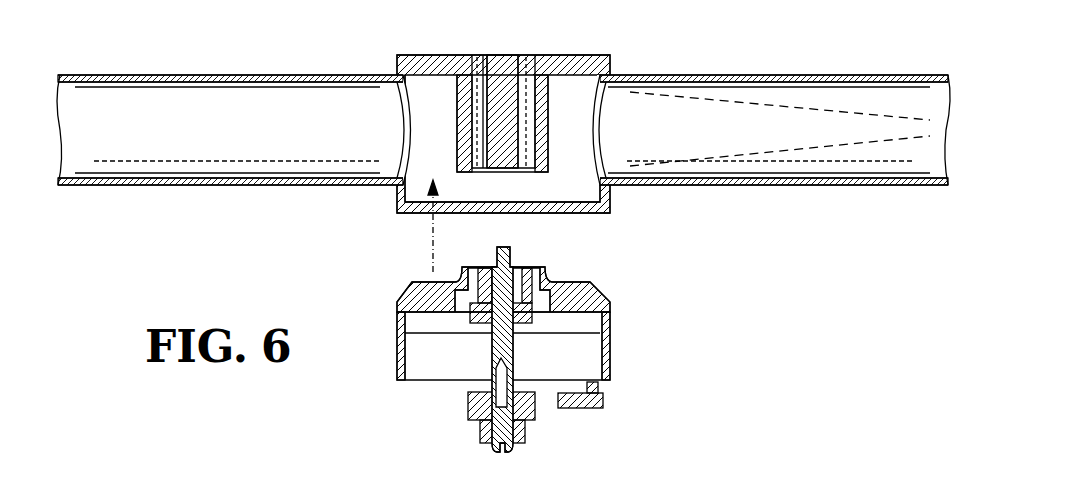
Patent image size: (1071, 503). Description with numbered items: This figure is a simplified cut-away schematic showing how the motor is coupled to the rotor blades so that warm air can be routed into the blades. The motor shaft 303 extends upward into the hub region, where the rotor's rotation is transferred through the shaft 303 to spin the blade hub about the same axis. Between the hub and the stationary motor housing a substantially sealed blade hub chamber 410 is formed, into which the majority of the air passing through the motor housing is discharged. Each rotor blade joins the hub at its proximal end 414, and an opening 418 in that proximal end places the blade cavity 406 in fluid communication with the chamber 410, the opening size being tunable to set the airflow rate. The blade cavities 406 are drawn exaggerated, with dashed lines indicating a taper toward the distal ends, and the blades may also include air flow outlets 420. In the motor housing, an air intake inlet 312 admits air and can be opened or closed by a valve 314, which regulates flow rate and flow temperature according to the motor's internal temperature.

The proximal end 414 is at (400, 76).
The opening 418 is at (597, 136).
The air flow outlet 420 is at (771, 144).
The blade hub chamber 410 is at (432, 153).
The blade cavity 406 is at (790, 132).
The shaft 303 is at (510, 255).
The air intake inlet 312 is at (598, 385).
The valve 314 is at (587, 408).